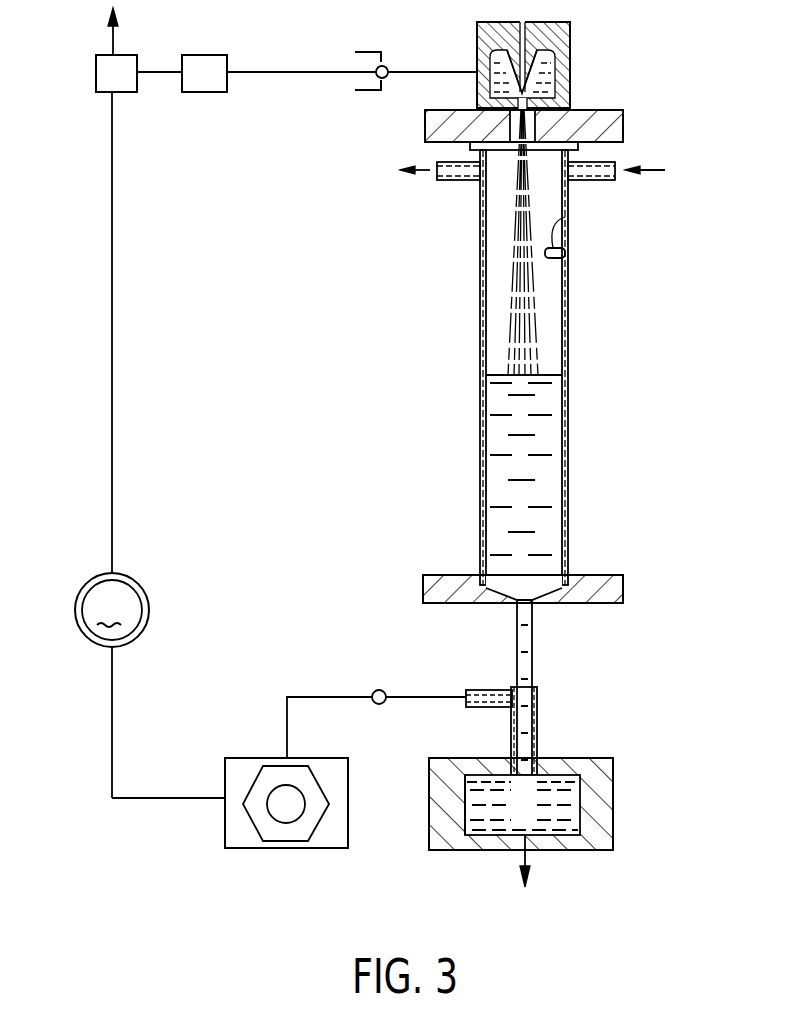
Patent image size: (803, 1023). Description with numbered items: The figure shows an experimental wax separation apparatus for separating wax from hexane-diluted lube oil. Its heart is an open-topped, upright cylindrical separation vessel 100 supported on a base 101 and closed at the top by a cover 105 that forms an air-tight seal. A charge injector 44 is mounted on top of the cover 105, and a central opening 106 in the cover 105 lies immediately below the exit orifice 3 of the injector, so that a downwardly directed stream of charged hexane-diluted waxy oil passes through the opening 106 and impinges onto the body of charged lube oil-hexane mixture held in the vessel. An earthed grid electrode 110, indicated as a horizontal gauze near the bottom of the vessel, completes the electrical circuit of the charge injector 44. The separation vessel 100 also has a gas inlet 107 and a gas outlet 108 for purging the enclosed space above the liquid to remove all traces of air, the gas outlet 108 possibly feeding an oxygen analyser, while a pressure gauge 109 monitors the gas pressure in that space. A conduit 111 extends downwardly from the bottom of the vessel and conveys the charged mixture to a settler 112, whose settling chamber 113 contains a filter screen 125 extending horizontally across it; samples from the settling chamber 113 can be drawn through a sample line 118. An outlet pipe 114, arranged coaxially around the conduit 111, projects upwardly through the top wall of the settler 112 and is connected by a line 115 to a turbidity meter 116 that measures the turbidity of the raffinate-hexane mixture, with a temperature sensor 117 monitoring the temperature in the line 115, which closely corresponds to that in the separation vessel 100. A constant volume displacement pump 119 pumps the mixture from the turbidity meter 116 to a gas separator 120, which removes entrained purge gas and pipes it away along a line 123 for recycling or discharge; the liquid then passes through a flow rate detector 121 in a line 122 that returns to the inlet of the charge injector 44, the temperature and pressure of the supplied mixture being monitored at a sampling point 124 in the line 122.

The exit orifice 3 is at (528, 100).
The charge injector 44 is at (477, 25).
The separation vessel 100 is at (568, 281).
The base 101 is at (623, 582).
The cover 105 is at (605, 127).
The central opening 106 is at (520, 134).
The gas inlet 107 is at (607, 180).
The gas outlet 108 is at (453, 181).
The pressure gauge 109 is at (565, 217).
The earthed grid electrode 110 is at (500, 591).
The conduit 111 is at (533, 664).
The settler 112 is at (602, 845).
The settling chamber 113 is at (556, 795).
The outlet pipe 114 is at (537, 735).
The line 115 is at (340, 697).
The turbidity meter 116 is at (252, 758).
The temperature sensor 117 is at (386, 704).
The sample line 118 is at (530, 862).
The constant volume displacement pump 119 is at (150, 445).
The gas separator 120 is at (106, 77).
The flow rate detector 121 is at (204, 80).
The line 122 is at (415, 71).
The line 123 is at (118, 38).
The sampling point 124 is at (385, 65).
The filter screen 125 is at (473, 788).